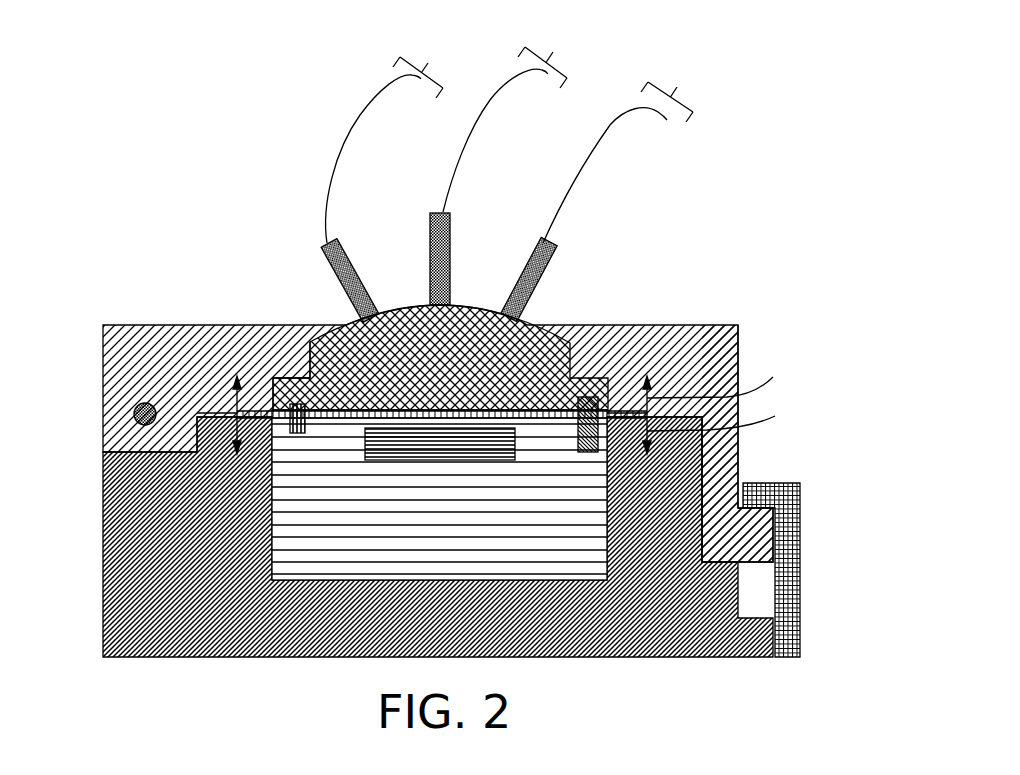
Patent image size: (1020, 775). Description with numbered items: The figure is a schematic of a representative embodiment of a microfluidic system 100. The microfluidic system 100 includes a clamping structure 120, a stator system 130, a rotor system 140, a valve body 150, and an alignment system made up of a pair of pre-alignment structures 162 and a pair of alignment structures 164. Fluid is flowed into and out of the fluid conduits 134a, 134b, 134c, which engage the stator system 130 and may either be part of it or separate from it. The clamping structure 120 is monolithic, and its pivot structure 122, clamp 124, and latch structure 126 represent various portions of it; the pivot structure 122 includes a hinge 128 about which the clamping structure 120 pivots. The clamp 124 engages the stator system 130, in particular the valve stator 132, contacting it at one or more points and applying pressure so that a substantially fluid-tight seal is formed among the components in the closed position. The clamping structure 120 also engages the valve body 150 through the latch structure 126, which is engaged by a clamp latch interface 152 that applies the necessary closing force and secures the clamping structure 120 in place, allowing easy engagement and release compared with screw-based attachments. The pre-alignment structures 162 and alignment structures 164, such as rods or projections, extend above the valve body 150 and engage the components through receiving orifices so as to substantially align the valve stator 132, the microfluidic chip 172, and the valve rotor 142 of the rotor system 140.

The microfluidic system 100 is at (481, 343).
The clamping structure 120 is at (415, 289).
The pivot structure 122 is at (137, 325).
The clamp 124 is at (310, 341).
The latch structure 126 is at (742, 469).
The hinge 128 is at (140, 405).
The stator system 130 is at (392, 221).
The valve stator 132 is at (461, 374).
The fluid conduit 134a is at (400, 138).
The fluid conduit 134b is at (527, 120).
The fluid conduit 134c is at (634, 152).
The rotor system 140 is at (567, 556).
The valve rotor 142 is at (457, 467).
The valve body 150 is at (683, 611).
The clamp latch interface 152 is at (800, 548).
The pre-alignment structure 162 is at (592, 380).
The alignment structure 164 is at (293, 392).
The microfluidic chip 172 is at (547, 400).